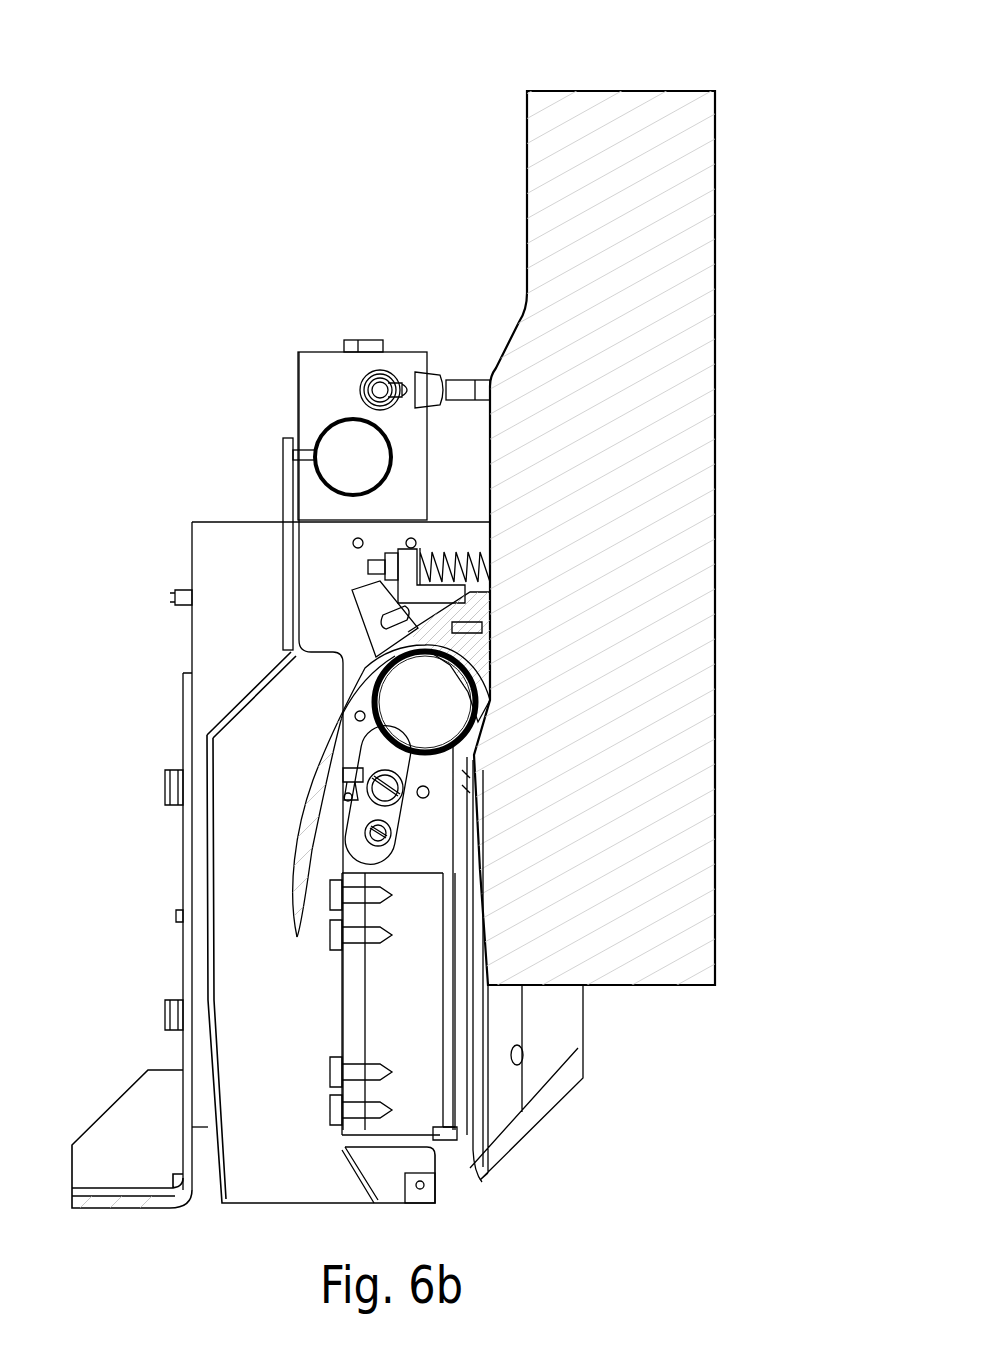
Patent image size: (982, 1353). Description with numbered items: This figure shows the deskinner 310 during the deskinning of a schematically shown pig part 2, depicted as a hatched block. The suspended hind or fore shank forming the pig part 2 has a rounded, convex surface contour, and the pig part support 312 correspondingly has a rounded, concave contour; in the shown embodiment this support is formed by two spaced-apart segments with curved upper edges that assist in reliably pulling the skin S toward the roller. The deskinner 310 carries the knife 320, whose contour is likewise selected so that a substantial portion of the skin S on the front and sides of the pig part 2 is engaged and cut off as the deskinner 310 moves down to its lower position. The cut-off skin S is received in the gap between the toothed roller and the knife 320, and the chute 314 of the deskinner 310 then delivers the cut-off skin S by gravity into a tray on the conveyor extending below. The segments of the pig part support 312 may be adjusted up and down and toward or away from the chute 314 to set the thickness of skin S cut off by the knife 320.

The pig part 2 is at (655, 108).
The deskinner 310 is at (398, 322).
The pig part support 312 is at (552, 1017).
The chute 314 is at (294, 1037).
The knife 320 is at (492, 708).
The skin S is at (312, 862).